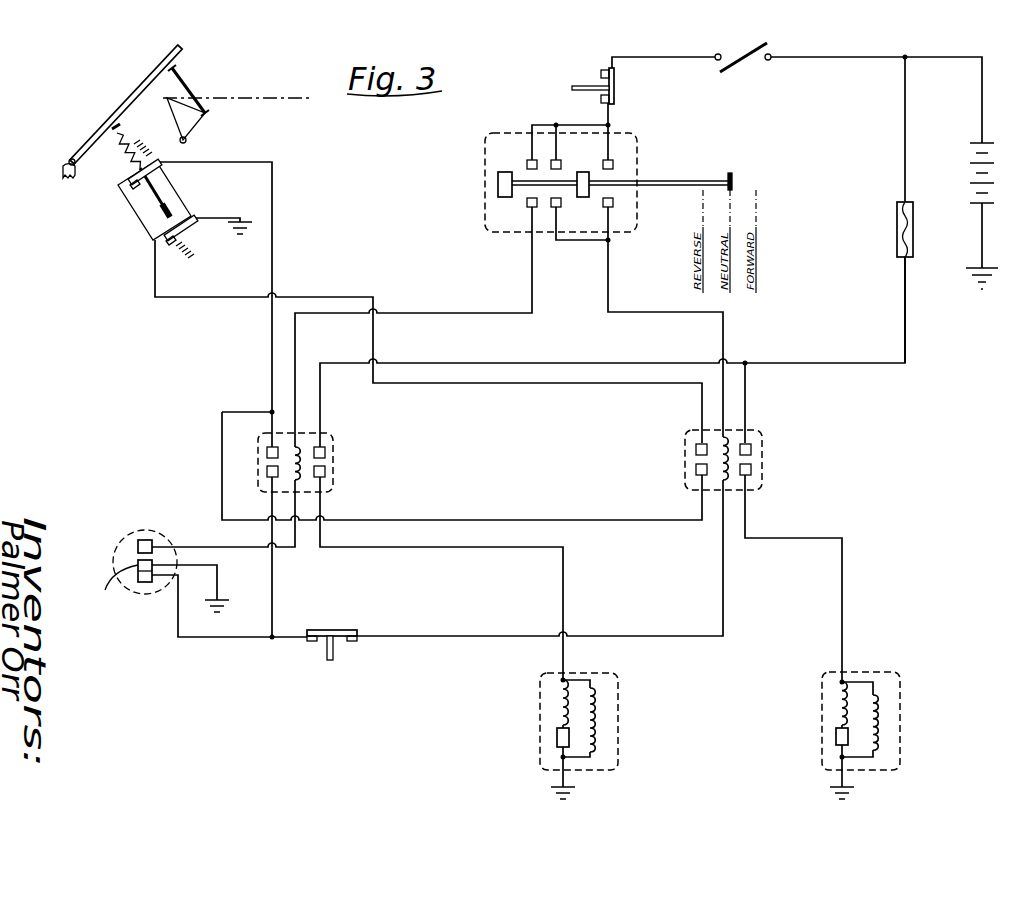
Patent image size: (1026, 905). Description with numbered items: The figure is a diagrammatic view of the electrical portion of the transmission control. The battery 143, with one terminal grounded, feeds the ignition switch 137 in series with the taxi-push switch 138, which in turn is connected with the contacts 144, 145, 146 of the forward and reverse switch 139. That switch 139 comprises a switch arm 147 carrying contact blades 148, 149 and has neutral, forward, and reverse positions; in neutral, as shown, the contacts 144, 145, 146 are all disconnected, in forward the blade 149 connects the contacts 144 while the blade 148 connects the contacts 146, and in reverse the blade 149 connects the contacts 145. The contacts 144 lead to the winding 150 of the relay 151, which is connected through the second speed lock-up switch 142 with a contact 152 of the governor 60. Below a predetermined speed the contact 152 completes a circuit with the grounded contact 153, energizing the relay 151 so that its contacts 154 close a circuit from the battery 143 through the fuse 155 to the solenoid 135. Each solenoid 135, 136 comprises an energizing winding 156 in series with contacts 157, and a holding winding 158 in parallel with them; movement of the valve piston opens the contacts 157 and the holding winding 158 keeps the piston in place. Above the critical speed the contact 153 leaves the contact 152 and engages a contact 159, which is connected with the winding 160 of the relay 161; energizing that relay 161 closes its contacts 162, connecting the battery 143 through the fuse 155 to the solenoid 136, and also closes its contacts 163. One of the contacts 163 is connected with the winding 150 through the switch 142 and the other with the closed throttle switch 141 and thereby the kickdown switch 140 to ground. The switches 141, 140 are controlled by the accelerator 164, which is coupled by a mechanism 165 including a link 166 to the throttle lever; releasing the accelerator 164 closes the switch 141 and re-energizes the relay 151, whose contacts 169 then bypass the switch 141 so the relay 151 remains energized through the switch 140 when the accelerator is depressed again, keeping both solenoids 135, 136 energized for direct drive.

The governor 60 is at (125, 542).
The solenoid 135 is at (906, 695).
The solenoid 136 is at (622, 705).
The ignition switch 137 is at (750, 62).
The taxi-push switch 138 is at (622, 86).
The forward and reverse switch 139 is at (645, 167).
The kickdown switch 140 is at (198, 224).
The closed throttle switch 141 is at (160, 165).
The second speed lock-up switch 142 is at (332, 628).
The battery 143 is at (962, 166).
The contacts 144 is at (615, 162).
The contacts 145 is at (559, 162).
The contacts 146 is at (528, 160).
The switch arm 147 is at (664, 188).
The contact blade 148 is at (498, 187).
The contact blade 149 is at (584, 198).
The winding 150 is at (730, 440).
The relay 151 is at (763, 446).
The contact 152 is at (146, 582).
The contact 153 is at (114, 588).
The contacts 154 is at (753, 468).
The fuse 155 is at (897, 239).
The energizing winding 156 is at (557, 700).
The contacts 157 is at (557, 742).
The holding winding 158 is at (597, 735).
The contact 159 is at (155, 543).
The winding 160 is at (300, 447).
The relay 161 is at (334, 460).
The contacts 162 is at (322, 470).
The contacts 163 is at (266, 452).
The accelerator 164 is at (124, 112).
The mechanism 165 is at (201, 132).
The link 166 is at (272, 96).
The contacts 169 is at (696, 450).